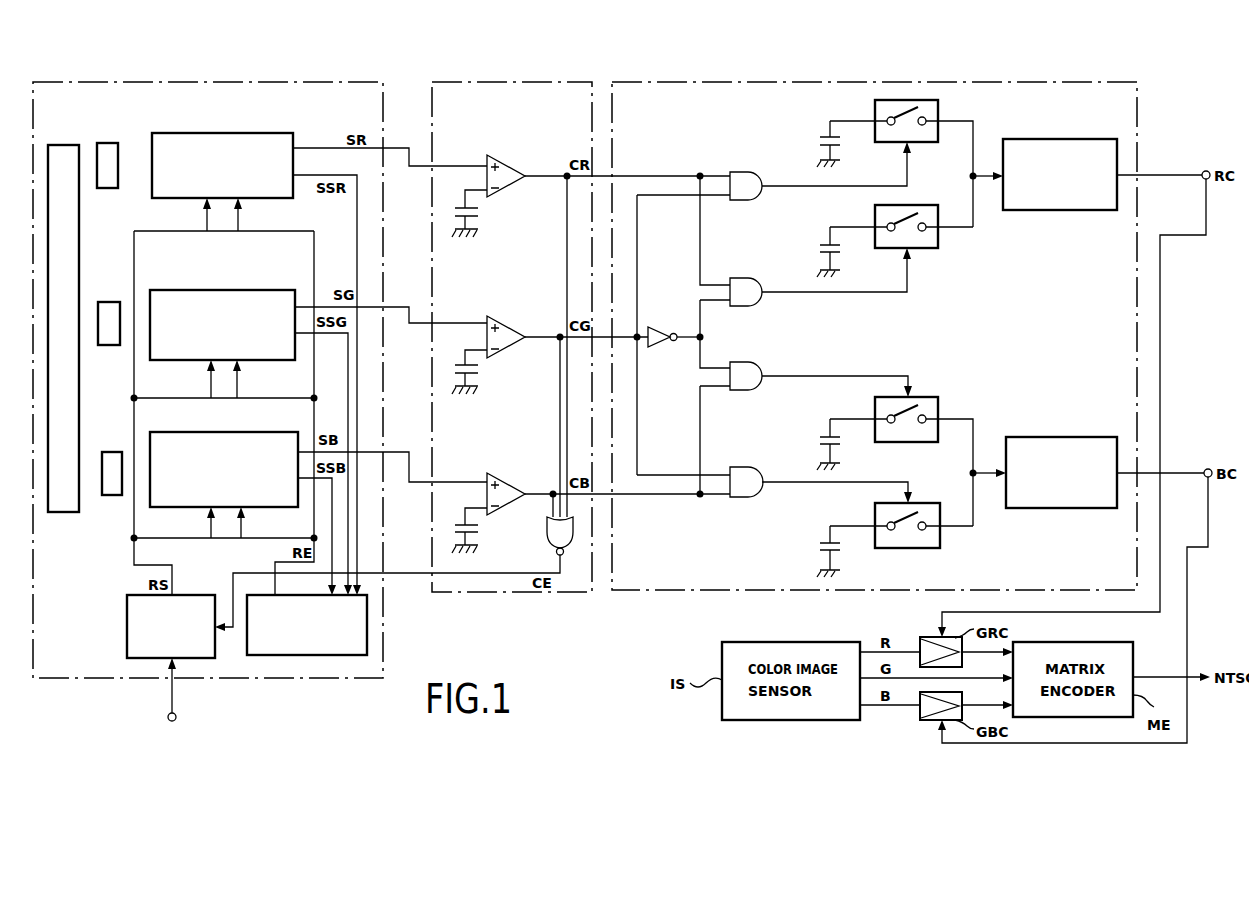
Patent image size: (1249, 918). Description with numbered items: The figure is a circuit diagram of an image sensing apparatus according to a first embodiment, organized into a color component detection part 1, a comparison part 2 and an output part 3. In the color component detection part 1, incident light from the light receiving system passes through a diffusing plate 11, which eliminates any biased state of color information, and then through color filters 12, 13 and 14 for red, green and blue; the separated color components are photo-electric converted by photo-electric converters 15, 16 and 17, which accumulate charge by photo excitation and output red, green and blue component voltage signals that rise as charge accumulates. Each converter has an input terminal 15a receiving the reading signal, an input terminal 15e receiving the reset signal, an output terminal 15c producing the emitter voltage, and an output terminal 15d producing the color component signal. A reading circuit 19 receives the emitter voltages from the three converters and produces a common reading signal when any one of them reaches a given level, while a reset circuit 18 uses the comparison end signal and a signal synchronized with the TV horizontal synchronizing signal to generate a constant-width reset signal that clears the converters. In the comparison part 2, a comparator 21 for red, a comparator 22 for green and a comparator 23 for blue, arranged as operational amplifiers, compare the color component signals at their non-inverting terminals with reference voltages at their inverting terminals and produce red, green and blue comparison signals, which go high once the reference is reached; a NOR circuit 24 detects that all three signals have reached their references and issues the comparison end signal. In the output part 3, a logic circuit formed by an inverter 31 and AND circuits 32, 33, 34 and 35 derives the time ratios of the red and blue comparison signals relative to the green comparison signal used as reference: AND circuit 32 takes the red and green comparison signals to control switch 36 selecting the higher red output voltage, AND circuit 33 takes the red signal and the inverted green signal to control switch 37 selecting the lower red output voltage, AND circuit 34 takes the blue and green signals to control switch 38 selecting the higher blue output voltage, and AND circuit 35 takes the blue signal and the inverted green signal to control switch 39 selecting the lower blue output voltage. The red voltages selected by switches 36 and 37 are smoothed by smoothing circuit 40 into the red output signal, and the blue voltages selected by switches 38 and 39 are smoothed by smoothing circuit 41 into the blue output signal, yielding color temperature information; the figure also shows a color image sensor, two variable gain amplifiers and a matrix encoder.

The color component detection part 1 is at (213, 82).
The comparison part 2 is at (510, 82).
The output part 3 is at (755, 82).
The diffusing plate 11 is at (66, 145).
The color filter for red 12 is at (107, 143).
The color filter for green 13 is at (108, 302).
The color filter for blue 14 is at (110, 452).
The photo-electric converter 15 is at (248, 133).
The input terminal 15a is at (252, 214).
The output terminal 15c is at (327, 378).
The output terminal 15d is at (390, 149).
The input terminal 15e is at (194, 214).
The photo-electric converter 16 is at (219, 290).
The photo-electric converter 17 is at (226, 432).
The reset circuit 18 is at (193, 595).
The reading circuit 19 is at (247, 635).
The comparator for red color 21 is at (510, 157).
The comparator for green color 22 is at (508, 318).
The comparator for blue color 23 is at (508, 475).
The NOR circuit 24 is at (547, 538).
The inverter 31 is at (660, 327).
The AND circuit 32 is at (742, 172).
The AND circuit 33 is at (742, 278).
The AND circuit 34 is at (742, 467).
The AND circuit 35 is at (750, 362).
The switch 36 is at (938, 112).
The switch 37 is at (938, 243).
The switch 38 is at (940, 543).
The switch 39 is at (938, 400).
The smoothing circuit 40 is at (1056, 139).
The smoothing circuit 41 is at (1050, 437).